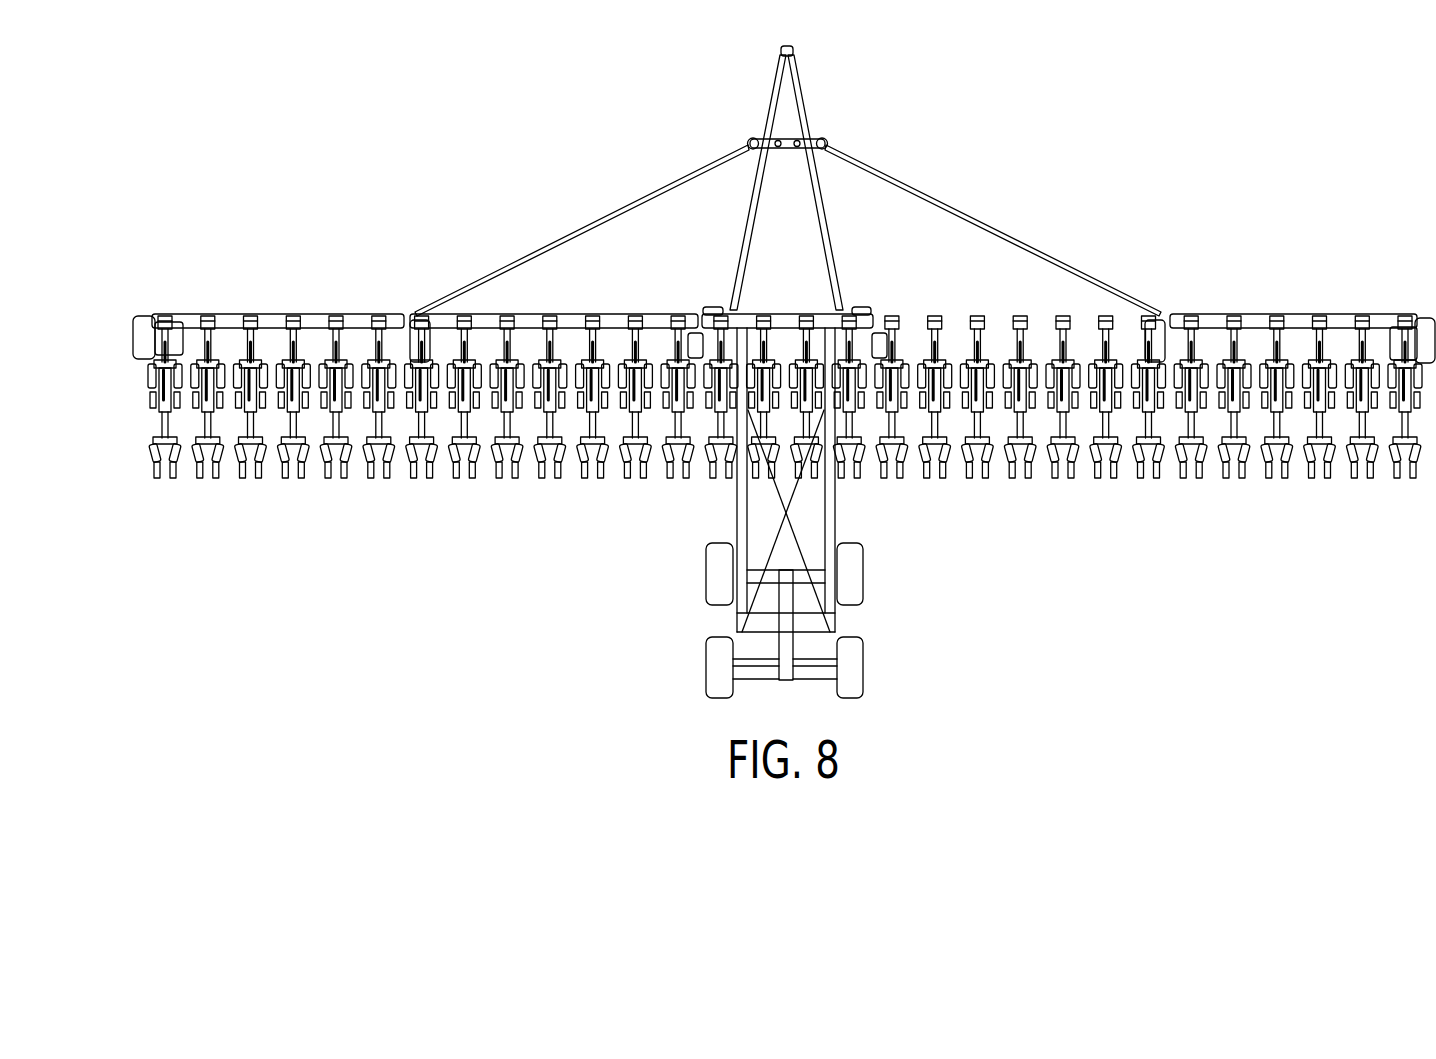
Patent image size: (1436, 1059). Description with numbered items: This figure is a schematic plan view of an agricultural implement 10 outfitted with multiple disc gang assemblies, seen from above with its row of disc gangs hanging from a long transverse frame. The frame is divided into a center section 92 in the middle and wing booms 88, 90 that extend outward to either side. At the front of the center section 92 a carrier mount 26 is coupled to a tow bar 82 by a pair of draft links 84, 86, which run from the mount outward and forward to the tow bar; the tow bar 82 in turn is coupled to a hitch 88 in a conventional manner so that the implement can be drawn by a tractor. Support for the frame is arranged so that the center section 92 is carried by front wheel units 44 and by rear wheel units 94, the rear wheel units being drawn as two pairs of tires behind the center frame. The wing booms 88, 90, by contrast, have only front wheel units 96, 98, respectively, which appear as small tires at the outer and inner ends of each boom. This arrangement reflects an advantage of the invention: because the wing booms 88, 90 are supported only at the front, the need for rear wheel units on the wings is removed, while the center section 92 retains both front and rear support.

The row unit 10 is at (618, 328).
The carrier mount 26 is at (692, 301).
The front wheel units 44 is at (708, 309).
The tow bar 82 is at (799, 75).
The draft link 84 is at (640, 195).
The draft link 86 is at (958, 210).
The hitch 88 is at (1258, 320).
The wing boom 90 is at (237, 314).
The center section 92 is at (788, 320).
The rear wheel units 94 is at (708, 587).
The front wheel units 96 is at (183, 325).
The front wheel units 98 is at (880, 328).